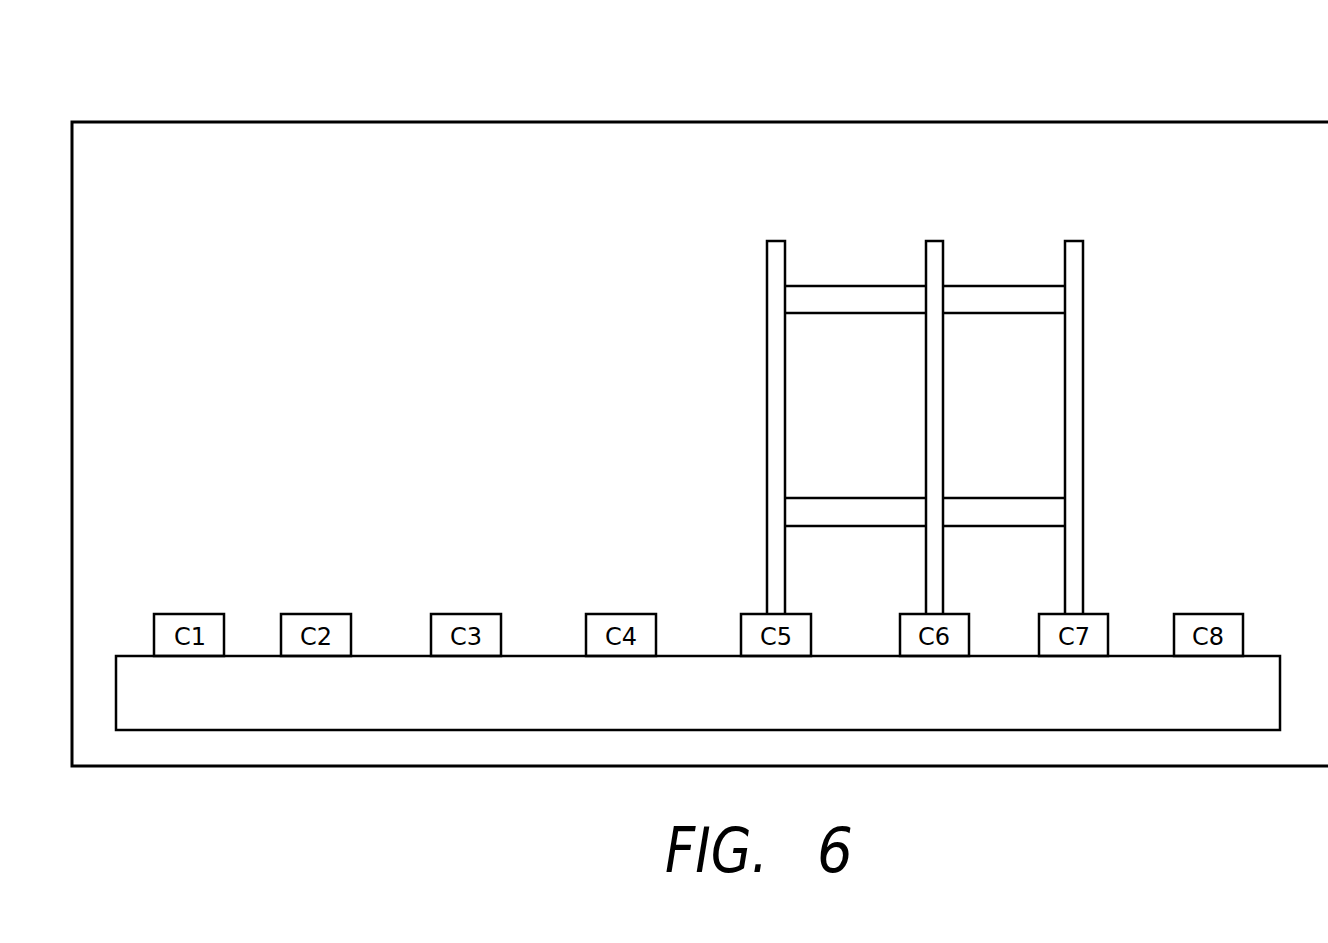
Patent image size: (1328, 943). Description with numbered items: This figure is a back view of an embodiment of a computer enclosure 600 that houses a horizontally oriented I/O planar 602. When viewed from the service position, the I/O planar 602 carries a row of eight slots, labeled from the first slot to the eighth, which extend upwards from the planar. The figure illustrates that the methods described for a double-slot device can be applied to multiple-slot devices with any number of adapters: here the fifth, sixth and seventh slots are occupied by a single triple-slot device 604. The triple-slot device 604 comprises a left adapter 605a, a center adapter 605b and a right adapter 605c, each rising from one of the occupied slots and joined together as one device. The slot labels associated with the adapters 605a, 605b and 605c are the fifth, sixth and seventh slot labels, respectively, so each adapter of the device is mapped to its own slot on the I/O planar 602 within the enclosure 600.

The computer enclosure 600 is at (545, 112).
The I/O planar 602 is at (1102, 727).
The triple-slot device 604 is at (903, 285).
The adapter 605a is at (767, 241).
The adapter 605b is at (926, 380).
The adapter 605c is at (1083, 241).